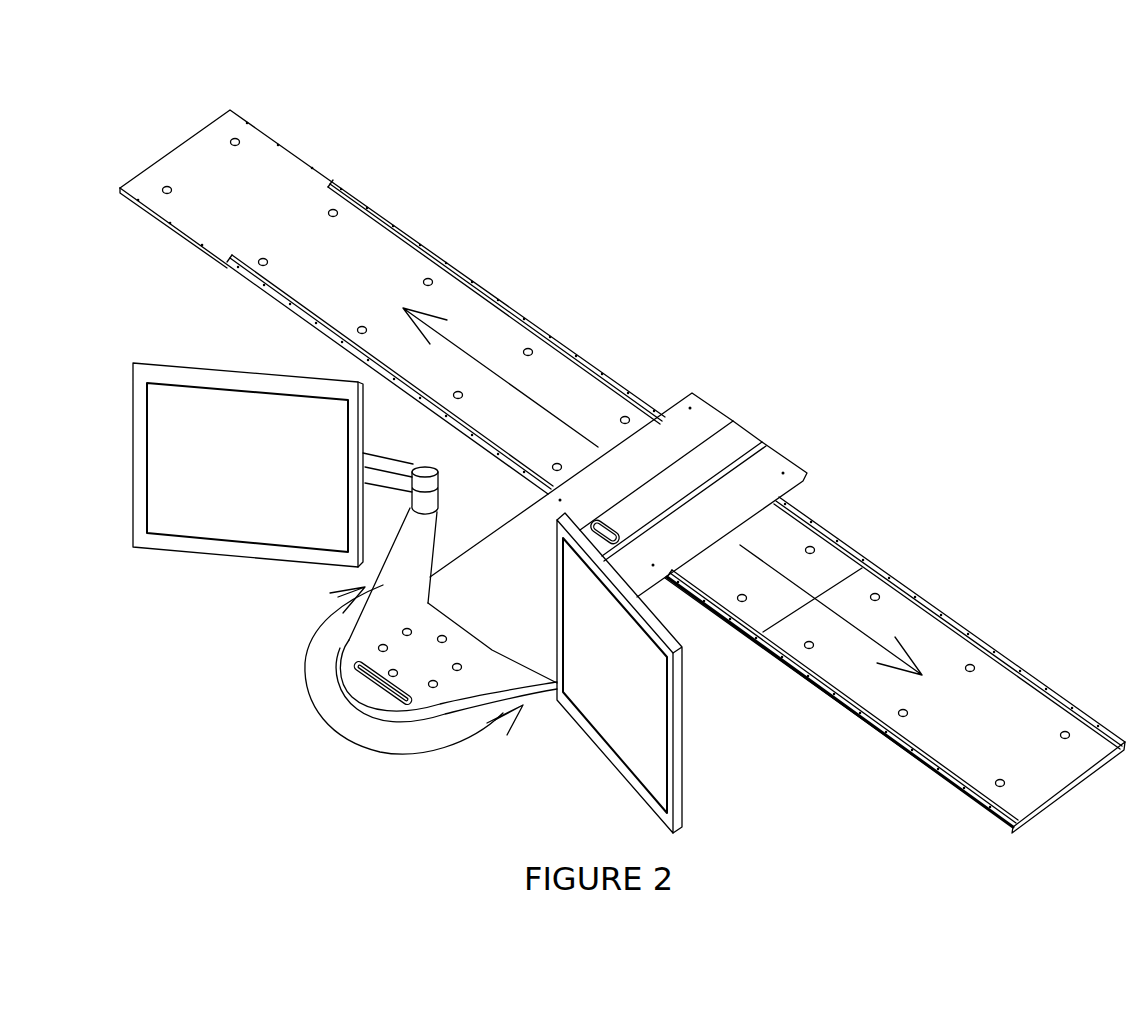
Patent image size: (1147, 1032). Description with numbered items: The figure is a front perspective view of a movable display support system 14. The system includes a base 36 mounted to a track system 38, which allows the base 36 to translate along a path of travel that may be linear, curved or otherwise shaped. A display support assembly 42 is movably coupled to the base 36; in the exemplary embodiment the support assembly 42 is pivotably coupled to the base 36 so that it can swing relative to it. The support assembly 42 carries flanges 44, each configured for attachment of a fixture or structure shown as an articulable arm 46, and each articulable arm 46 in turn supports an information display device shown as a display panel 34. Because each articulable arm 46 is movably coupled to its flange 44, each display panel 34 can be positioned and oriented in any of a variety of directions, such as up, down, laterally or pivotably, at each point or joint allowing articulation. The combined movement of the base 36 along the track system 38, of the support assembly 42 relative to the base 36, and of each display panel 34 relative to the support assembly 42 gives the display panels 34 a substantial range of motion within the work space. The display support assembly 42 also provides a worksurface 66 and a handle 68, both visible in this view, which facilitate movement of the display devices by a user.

The movable display support system 14 is at (616, 314).
The track system 38 is at (998, 707).
The base 36 is at (695, 430).
The display panel 34 is at (197, 503).
The articulable arm 46 is at (385, 462).
The flange 44 is at (387, 577).
The display support assembly 42 is at (455, 687).
The worksurface 66 is at (422, 655).
The handle 68 is at (365, 690).